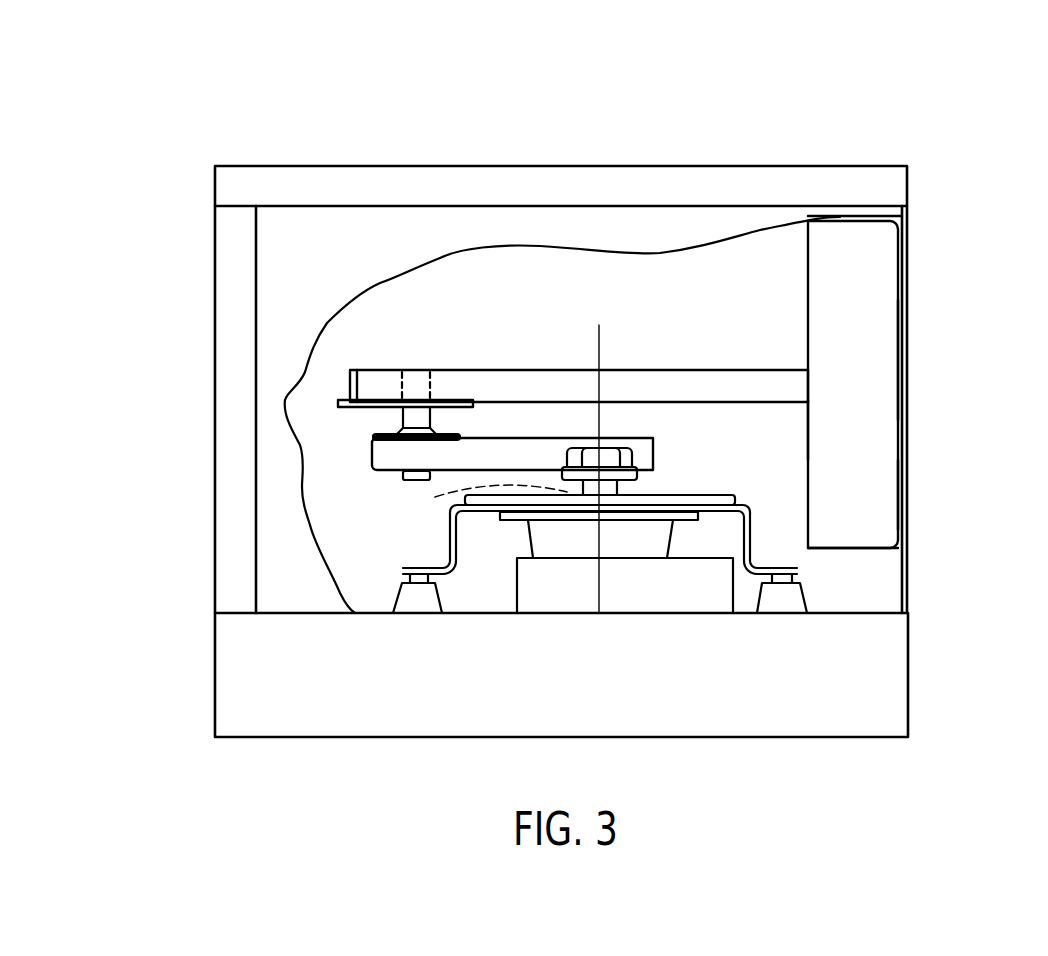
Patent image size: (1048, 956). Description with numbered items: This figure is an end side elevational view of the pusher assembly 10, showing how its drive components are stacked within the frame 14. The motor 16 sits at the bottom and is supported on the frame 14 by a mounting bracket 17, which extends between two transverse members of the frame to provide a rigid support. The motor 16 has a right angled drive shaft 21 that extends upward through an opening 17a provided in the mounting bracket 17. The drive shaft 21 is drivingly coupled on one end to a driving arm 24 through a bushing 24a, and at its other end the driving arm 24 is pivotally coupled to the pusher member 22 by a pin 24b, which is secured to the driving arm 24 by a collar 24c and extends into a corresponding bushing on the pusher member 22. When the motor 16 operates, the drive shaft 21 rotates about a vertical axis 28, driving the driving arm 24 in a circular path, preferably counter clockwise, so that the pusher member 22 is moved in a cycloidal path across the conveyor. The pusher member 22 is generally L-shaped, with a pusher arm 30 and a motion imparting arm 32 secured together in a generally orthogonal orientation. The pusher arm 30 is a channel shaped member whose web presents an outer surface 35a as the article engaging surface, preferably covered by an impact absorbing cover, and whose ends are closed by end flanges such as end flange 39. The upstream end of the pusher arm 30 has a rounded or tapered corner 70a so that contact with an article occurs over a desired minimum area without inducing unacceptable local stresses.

The pusher assembly 10 is at (399, 136).
The frame 14 is at (664, 150).
The motor 16 is at (517, 559).
The mounting bracket 17 is at (442, 533).
The opening 17a is at (476, 500).
The right angled drive shaft 21 is at (613, 492).
The pusher member 22 is at (920, 261).
The driving arm 24 is at (500, 425).
The bushing 24a is at (632, 450).
The pin 24b is at (400, 410).
The collar 24c is at (440, 432).
The vertical axis 28 is at (600, 335).
The pusher arm 30 is at (882, 565).
The motion imparting arm 32 is at (655, 357).
The outer surface 35a is at (909, 363).
The end flange 39 is at (869, 428).
The rounded or tapered corner 70a is at (911, 486).